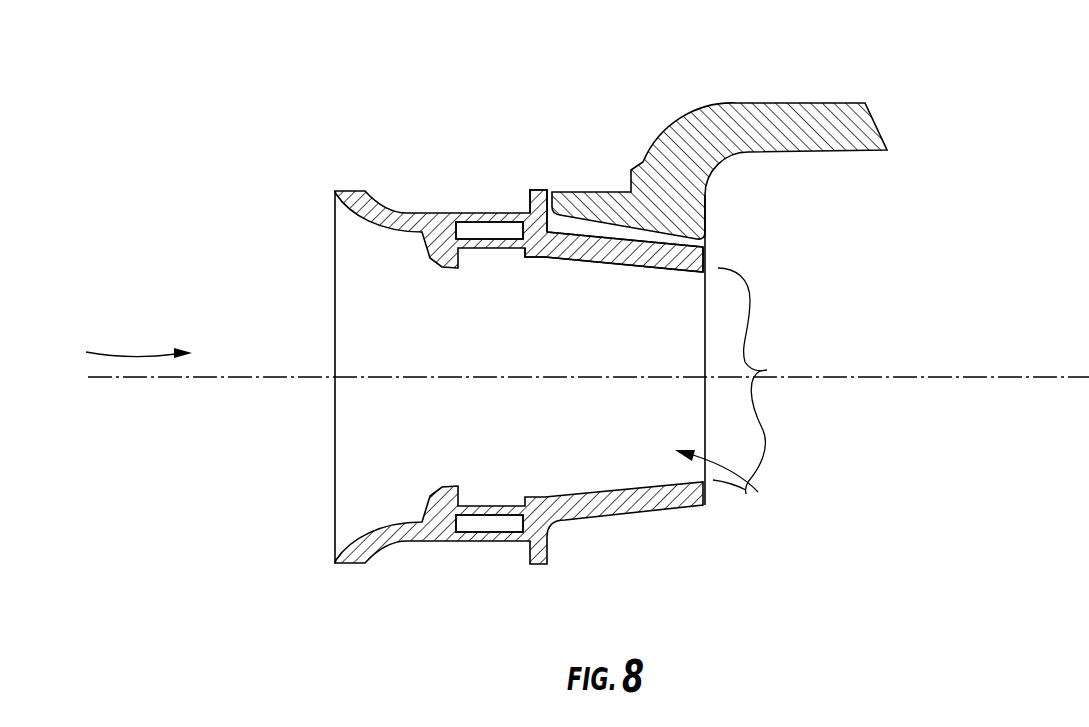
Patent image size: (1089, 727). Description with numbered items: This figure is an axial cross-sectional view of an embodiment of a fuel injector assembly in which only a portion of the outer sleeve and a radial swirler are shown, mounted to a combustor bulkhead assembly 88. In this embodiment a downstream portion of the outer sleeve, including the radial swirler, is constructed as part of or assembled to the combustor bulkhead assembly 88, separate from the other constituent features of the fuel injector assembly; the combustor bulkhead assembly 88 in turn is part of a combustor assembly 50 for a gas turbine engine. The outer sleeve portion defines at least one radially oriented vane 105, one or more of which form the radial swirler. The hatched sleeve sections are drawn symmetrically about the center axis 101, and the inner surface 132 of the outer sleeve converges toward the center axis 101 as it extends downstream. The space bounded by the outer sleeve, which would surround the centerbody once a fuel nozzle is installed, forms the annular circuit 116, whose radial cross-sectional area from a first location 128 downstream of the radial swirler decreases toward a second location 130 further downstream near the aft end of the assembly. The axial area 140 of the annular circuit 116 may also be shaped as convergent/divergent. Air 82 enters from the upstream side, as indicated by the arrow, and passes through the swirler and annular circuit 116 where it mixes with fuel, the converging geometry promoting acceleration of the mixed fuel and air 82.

The combustor assembly 50 is at (726, 128).
The combustor bulkhead assembly 88 is at (793, 117).
The first location 128 is at (538, 258).
The second location 130 is at (704, 262).
The inner surface of the outer sleeve 132 is at (641, 265).
The annular circuit 116 is at (767, 370).
The axial area 140 is at (746, 492).
The air 82 is at (124, 354).
The center axis 101 is at (1018, 375).
The radially oriented vane 105 is at (497, 540).